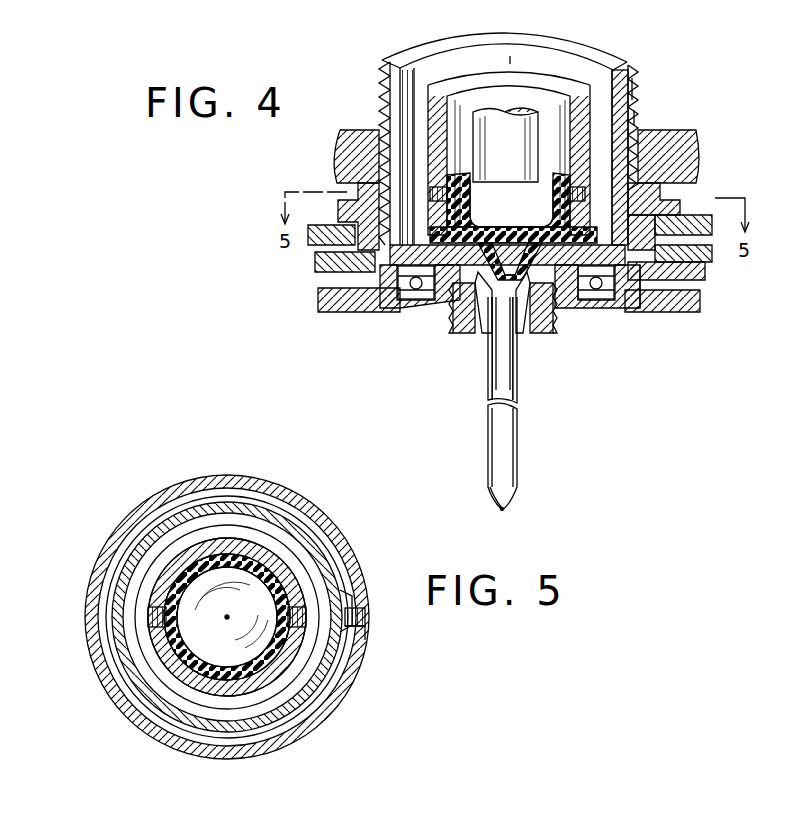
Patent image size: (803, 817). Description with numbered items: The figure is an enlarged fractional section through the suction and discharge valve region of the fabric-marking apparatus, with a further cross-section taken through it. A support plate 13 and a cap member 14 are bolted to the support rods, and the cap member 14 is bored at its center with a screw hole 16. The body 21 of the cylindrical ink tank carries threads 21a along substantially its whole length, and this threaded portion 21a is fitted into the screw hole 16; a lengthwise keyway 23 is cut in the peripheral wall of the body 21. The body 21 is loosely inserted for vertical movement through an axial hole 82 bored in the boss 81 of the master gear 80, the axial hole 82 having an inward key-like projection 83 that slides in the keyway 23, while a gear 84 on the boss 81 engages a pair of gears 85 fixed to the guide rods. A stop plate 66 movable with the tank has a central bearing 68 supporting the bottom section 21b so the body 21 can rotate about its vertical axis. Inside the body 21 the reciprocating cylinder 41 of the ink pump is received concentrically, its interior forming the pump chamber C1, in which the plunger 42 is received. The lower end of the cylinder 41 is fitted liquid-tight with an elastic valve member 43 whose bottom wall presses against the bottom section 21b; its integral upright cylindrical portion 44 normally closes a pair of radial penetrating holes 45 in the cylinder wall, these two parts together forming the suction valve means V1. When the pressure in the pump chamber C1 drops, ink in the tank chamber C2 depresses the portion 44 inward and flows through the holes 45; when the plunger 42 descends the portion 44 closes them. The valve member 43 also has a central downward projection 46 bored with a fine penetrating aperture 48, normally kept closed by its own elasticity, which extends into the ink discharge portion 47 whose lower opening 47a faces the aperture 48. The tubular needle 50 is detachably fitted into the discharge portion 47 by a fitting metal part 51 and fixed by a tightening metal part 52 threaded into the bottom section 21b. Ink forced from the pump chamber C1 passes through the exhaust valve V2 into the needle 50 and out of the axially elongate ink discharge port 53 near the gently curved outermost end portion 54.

In FIG. 4, the support plate 13 is at (700, 256).
In FIG. 4, the cap member 14 is at (686, 138).
In FIG. 4, the screw hole 16 is at (637, 128).
In FIG. 4, the body 21 is at (578, 48).
In FIG. 5, the body 21 is at (327, 564).
In FIG. 4, the threads 21a is at (383, 79).
In FIG. 5, the threads 21a is at (297, 527).
In FIG. 4, the bottom section 21b is at (642, 302).
In FIG. 4, the keyway 23 is at (628, 64).
In FIG. 5, the keyway 23 is at (358, 620).
In FIG. 4, the cylinder 41 is at (457, 90).
In FIG. 5, the cylinder 41 is at (150, 592).
In FIG. 4, the plunger 42 is at (490, 120).
In FIG. 4, the elastic valve member 43 is at (472, 226).
In FIG. 4, the upright cylindrical portion 44 is at (458, 207).
In FIG. 5, the upright cylindrical portion 44 is at (165, 642).
In FIG. 4, the penetrating holes 45 is at (430, 192).
In FIG. 5, the penetrating holes 45 is at (150, 620).
In FIG. 4, the projection 46 is at (504, 224).
In FIG. 4, the ink discharge portion 47 is at (452, 318).
In FIG. 4, the opening 47a is at (512, 347).
In FIG. 4, the fine penetrating aperture 48 is at (460, 258).
In FIG. 5, the fine penetrating aperture 48 is at (226, 619).
In FIG. 4, the tubular needle 50 is at (518, 389).
In FIG. 4, the fitting metal part 51 is at (483, 338).
In FIG. 4, the tightening metal part 52 is at (560, 324).
In FIG. 4, the ink discharge port 53 is at (494, 498).
In FIG. 4, the outermost end portion 54 is at (503, 512).
In FIG. 4, the stop plate 66 is at (696, 312).
In FIG. 4, the bearing 68 is at (600, 302).
In FIG. 4, the master gear 80 is at (684, 220).
In FIG. 4, the boss 81 is at (668, 198).
In FIG. 5, the boss 81 is at (346, 585).
In FIG. 4, the axial hole 82 is at (380, 270).
In FIG. 5, the axial hole 82 is at (332, 674).
In FIG. 5, the key-like projection 83 is at (355, 632).
In FIG. 4, the gear 84 is at (690, 283).
In FIG. 4, the gears 85 is at (316, 245).
In FIG. 4, the pump chamber C1 is at (525, 78).
In FIG. 5, the pump chamber C1 is at (245, 692).
In FIG. 4, the tank chamber C2 is at (636, 87).
In FIG. 5, the tank chamber C2 is at (272, 712).
In FIG. 4, the suction valve means V1 is at (466, 174).
In FIG. 4, the exhaust valve V2 is at (514, 246).